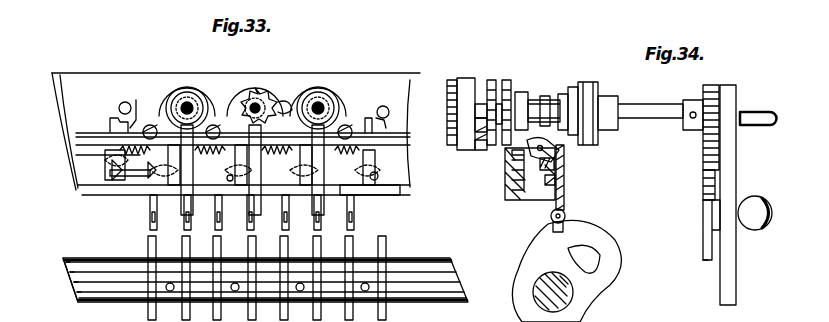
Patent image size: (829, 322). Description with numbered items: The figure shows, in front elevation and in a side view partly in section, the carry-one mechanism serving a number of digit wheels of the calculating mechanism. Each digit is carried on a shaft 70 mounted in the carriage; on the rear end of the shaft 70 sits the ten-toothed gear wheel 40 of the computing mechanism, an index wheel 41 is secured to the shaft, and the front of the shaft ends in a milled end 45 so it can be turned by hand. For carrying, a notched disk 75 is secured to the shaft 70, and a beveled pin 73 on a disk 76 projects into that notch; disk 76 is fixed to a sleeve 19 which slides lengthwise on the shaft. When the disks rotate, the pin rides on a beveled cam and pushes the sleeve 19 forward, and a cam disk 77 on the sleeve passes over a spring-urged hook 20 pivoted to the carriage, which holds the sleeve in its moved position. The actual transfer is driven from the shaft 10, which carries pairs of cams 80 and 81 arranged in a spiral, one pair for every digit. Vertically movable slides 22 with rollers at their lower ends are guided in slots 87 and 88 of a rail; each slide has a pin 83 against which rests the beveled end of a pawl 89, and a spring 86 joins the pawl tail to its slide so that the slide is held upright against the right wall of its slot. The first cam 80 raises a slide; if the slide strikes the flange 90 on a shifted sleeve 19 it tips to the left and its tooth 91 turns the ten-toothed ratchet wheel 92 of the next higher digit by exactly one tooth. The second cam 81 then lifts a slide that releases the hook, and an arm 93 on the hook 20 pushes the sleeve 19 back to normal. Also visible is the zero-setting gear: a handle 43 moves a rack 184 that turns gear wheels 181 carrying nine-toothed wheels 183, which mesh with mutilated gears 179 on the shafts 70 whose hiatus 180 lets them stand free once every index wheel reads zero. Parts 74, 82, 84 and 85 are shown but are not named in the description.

In FIG. 33, the shaft 10 is at (452, 290).
In FIG. 34, the shaft 10 is at (578, 293).
In FIG. 33, the sleeve 19 is at (178, 80).
In FIG. 34, the sleeve 19 is at (520, 94).
In FIG. 33, the hook 20 is at (135, 110).
In FIG. 34, the hook 20 is at (523, 158).
In FIG. 33, the slide 22 is at (241, 185).
In FIG. 34, the slide 22 is at (565, 188).
In FIG. 34, the gear wheel 40 is at (452, 80).
In FIG. 34, the index wheel 41 is at (590, 84).
In FIG. 34, the handle 43 is at (773, 212).
In FIG. 34, the milled end 45 is at (770, 112).
In FIG. 33, the shaft 70 is at (190, 104).
In FIG. 34, the shaft 70 is at (670, 106).
In FIG. 34, the pin 73 is at (490, 150).
In FIG. 34, the collar 74 is at (478, 152).
In FIG. 34, the disk 75 is at (490, 82).
In FIG. 34, the disk 76 is at (506, 84).
In FIG. 34, the cam disk 77 is at (534, 96).
In FIG. 33, the cam 80 is at (150, 250).
In FIG. 34, the cam 80 is at (598, 230).
In FIG. 33, the cam 81 is at (186, 247).
In FIG. 33, the slide 82 is at (262, 157).
In FIG. 34, the slide 82 is at (568, 218).
In FIG. 33, the pin 83 is at (165, 182).
In FIG. 33, the pin 84 is at (228, 186).
In FIG. 33, the spring 85 is at (108, 172).
In FIG. 34, the spring 85 is at (548, 188).
In FIG. 33, the spring 86 is at (120, 178).
In FIG. 33, the slot 87 is at (378, 170).
In FIG. 33, the slot 88 is at (358, 195).
In FIG. 33, the pawl 89 is at (110, 165).
In FIG. 34, the pawl 89 is at (570, 165).
In FIG. 33, the flange 90 is at (336, 110).
In FIG. 34, the flange 90 is at (565, 94).
In FIG. 33, the tooth 91 is at (283, 104).
In FIG. 33, the ratchet wheel 92 is at (183, 70).
In FIG. 34, the ratchet wheel 92 is at (572, 88).
In FIG. 34, the arm 93 is at (550, 99).
In FIG. 34, the mutilated gear wheel 179 is at (714, 86).
In FIG. 34, the hiatus 180 is at (726, 291).
In FIG. 34, the gear wheel 181 is at (703, 176).
In FIG. 34, the nine-toothed gear wheel 183 is at (738, 162).
In FIG. 34, the rack 184 is at (715, 204).